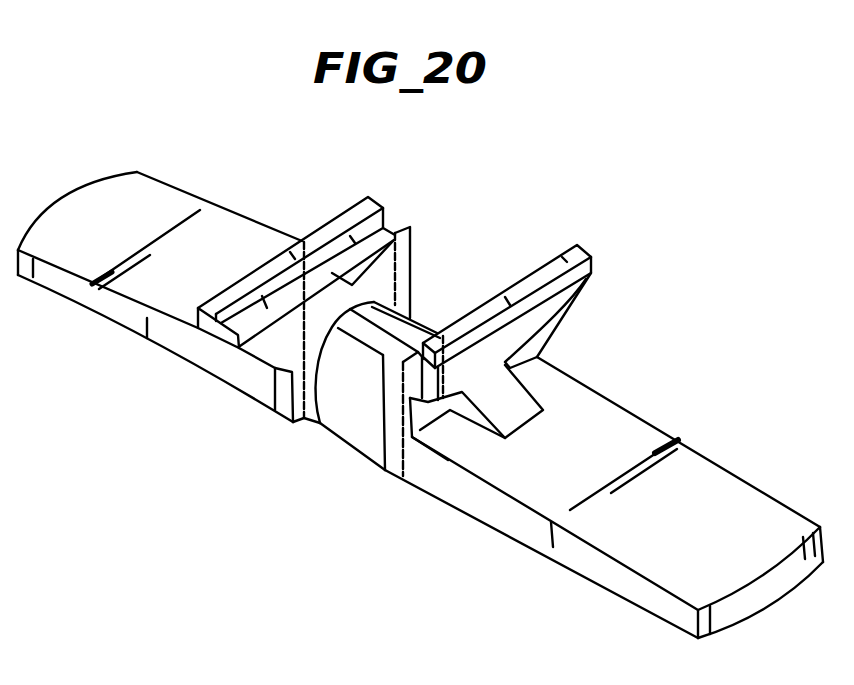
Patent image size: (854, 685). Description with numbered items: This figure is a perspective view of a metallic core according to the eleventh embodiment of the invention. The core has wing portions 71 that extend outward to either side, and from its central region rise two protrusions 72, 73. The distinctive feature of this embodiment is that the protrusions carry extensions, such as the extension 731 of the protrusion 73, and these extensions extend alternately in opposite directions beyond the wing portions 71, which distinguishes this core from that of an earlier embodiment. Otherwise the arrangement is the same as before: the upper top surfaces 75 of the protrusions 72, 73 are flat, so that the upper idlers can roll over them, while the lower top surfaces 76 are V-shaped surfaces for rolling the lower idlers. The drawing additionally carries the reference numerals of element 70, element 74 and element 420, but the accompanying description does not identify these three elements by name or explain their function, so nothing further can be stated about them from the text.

The central hub member 70 is at (300, 445).
The wing portions 71 is at (167, 192).
The protrusion 72 is at (302, 224).
The protrusion 73 is at (463, 303).
The curved boss 74 is at (362, 432).
The upper top surfaces 75 is at (350, 212).
The lower top surfaces 76 is at (400, 228).
The extension 731 is at (593, 276).
The step face 420 is at (220, 340).